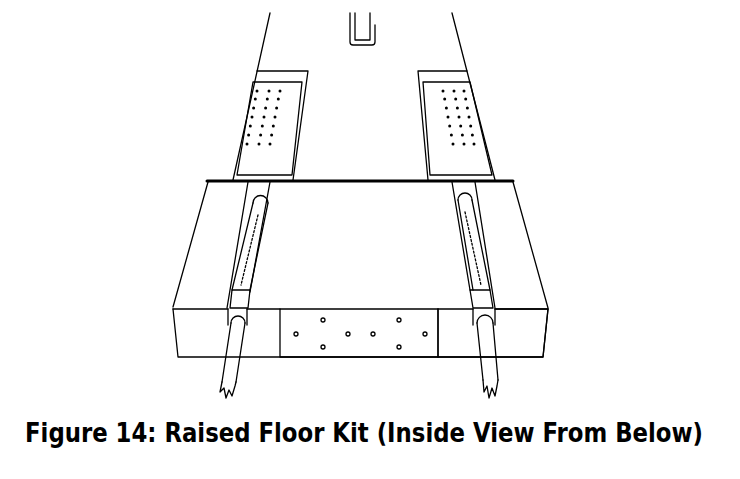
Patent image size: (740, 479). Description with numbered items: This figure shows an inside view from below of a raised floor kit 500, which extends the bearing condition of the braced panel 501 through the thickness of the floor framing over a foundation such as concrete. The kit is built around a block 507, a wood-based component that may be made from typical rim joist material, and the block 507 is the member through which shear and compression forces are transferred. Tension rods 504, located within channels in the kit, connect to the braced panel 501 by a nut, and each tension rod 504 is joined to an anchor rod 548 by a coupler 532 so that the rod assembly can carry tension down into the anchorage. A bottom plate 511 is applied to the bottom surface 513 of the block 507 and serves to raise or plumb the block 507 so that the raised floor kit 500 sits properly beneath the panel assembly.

The raised floor kit 500 is at (177, 238).
The braced panel 501 is at (225, 128).
The tension rod 504 is at (460, 202).
The block 507 is at (207, 194).
The bottom plate 511 is at (520, 347).
The bottom surface 513 is at (423, 325).
The coupler 532 is at (478, 295).
The anchor rod 548 is at (227, 365).